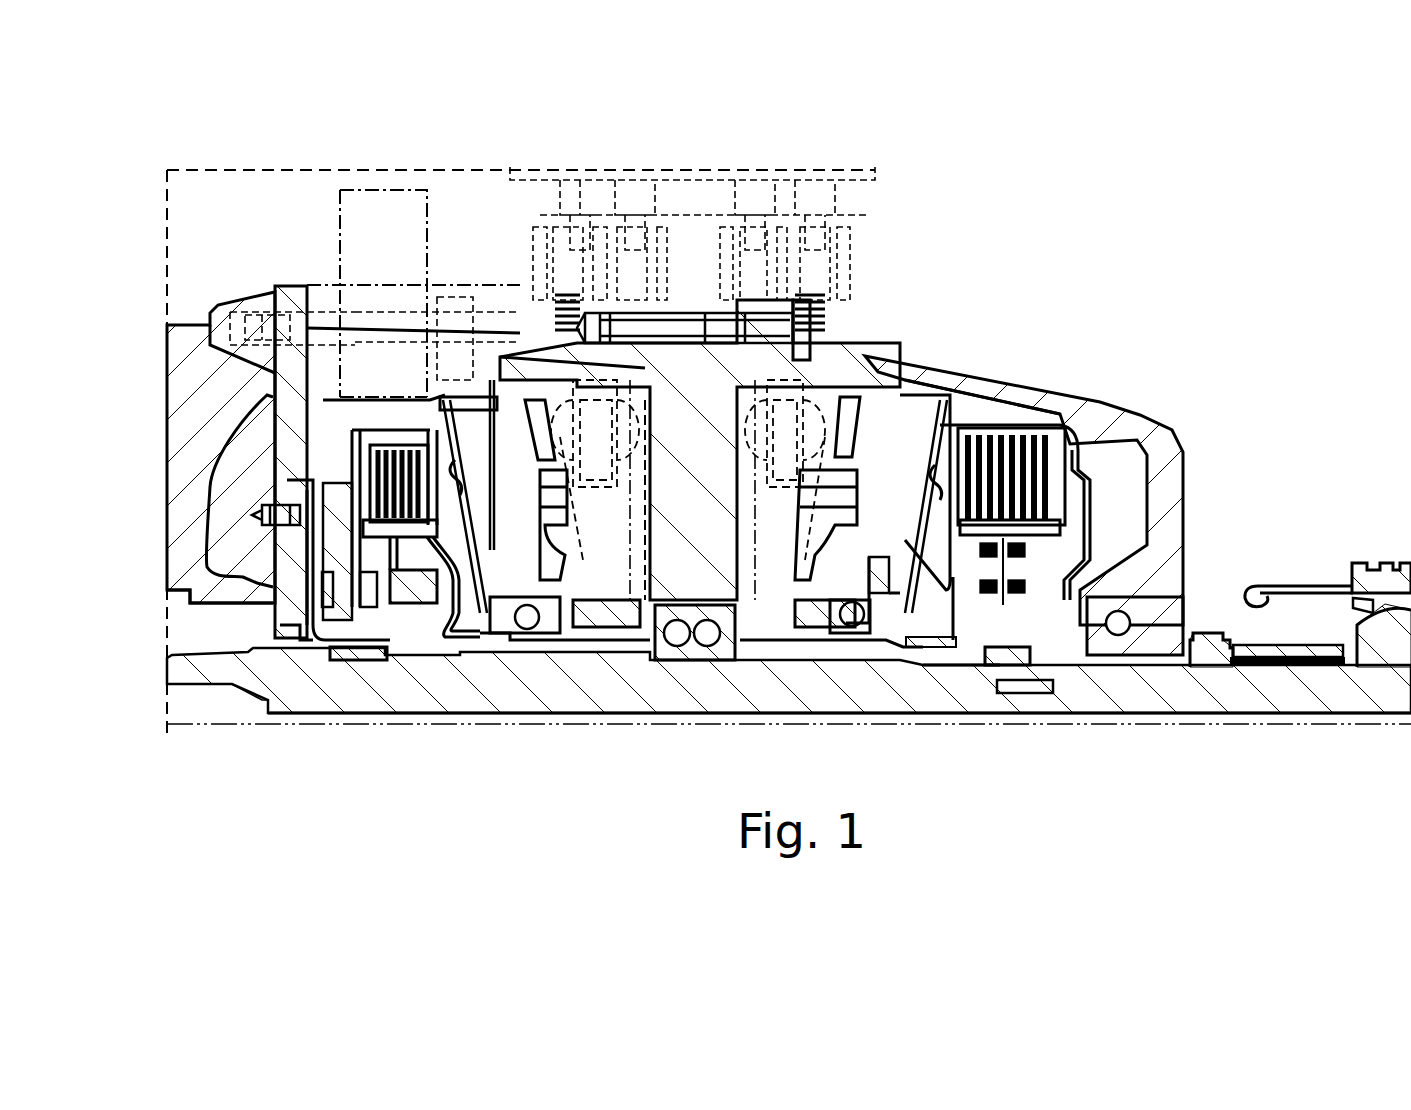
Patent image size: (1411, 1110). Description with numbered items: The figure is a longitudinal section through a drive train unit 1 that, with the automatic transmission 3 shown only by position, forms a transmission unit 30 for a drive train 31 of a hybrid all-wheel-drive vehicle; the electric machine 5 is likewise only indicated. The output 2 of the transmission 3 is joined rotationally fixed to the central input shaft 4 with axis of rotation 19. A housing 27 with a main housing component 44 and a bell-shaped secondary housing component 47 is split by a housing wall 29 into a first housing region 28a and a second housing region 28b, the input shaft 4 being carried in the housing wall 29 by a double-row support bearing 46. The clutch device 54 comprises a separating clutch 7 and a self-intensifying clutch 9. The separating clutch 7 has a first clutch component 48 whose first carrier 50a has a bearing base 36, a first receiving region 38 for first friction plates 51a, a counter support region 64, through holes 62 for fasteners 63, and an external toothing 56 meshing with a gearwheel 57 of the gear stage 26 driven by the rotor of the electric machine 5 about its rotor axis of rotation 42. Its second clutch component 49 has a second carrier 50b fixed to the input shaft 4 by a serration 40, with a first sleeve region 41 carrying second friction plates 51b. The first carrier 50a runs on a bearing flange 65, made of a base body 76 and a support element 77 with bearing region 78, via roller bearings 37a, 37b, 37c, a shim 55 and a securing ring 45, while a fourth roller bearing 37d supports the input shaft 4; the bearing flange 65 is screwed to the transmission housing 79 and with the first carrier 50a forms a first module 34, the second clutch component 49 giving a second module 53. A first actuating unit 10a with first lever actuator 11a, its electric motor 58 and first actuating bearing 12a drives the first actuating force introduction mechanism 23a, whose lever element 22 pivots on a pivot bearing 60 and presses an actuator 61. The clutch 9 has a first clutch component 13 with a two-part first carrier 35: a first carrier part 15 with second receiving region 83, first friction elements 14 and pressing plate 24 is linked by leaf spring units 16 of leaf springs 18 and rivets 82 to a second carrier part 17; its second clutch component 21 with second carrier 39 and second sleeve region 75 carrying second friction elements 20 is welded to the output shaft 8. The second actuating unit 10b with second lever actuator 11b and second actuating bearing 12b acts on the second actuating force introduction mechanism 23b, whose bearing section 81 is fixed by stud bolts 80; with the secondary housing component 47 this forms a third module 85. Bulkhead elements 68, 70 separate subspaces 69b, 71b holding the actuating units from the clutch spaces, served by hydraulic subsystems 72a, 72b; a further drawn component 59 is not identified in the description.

The drive train unit 1 is at (487, 195).
The output 2 is at (237, 262).
The transmission 3 is at (200, 288).
The input shaft 4 is at (300, 727).
The electric machine 5 is at (383, 153).
The separating clutch 7 is at (550, 655).
The output shaft 8 is at (1347, 718).
The second clutch 9 is at (1033, 432).
The first actuating unit 10a is at (580, 647).
The second actuating unit 10b is at (830, 640).
The first lever actuator 11a is at (692, 282).
The second lever actuator 11b is at (850, 400).
The first actuating bearing 12a is at (556, 572).
The second actuating bearing 12b is at (945, 640).
The first clutch component 13 is at (1047, 653).
The first friction elements 14 is at (1027, 405).
The first carrier part 15 is at (955, 660).
The leaf spring units 16 is at (1008, 600).
The second carrier part 17 is at (1022, 655).
The leaf springs 18 is at (1040, 548).
The axis of rotation 19 is at (210, 726).
The second friction elements 20 is at (1047, 432).
The second clutch component 21 is at (1078, 447).
The lever element 22 is at (470, 505).
The first actuating force introduction mechanism 23a is at (513, 295).
The second actuating force introduction mechanism 23b is at (945, 403).
The pressing plate 24 is at (550, 415).
The gear stage 26 is at (305, 390).
The housing 27 is at (697, 360).
The first housing region 28a is at (575, 310).
The second housing region 28b is at (937, 385).
The housing wall 29 is at (700, 450).
The transmission unit 30 is at (832, 125).
The drive train 31 is at (1147, 148).
The first module 34 is at (305, 410).
The first carrier 35 is at (987, 668).
The bearing base 36 is at (295, 608).
The first roller bearing 37a is at (400, 660).
The second roller bearing 37b is at (290, 600).
The third roller bearing 37c is at (415, 655).
The fourth roller bearing 37d is at (375, 650).
The first receiving region 38 is at (380, 440).
The second carrier 39 is at (1138, 578).
The serration 40 is at (470, 640).
The first sleeve region 41 is at (425, 525).
The rotor axis of rotation 42 is at (437, 400).
The main housing component 44 is at (545, 350).
The securing ring 45 is at (425, 640).
The support bearing 46 is at (680, 648).
The secondary housing component 47 is at (1165, 440).
The first clutch component 48 is at (260, 512).
The second clutch component 49 is at (482, 390).
The first carrier 50a is at (300, 457).
The second carrier 50b is at (455, 650).
The first friction plates 51a is at (410, 445).
The second friction plates 51b is at (425, 508).
The second module 53 is at (748, 340).
The clutch device 54 is at (700, 157).
The shim 55 is at (440, 640).
The toothing 56 is at (355, 405).
The gearwheel 57 is at (413, 243).
The electric motor 58 is at (530, 172).
The rotor hub 59 is at (647, 655).
The pivot bearing 60 is at (527, 405).
The actuator 61 is at (470, 468).
The through holes 62 is at (258, 563).
The fasteners 63 is at (290, 488).
The counter support region 64 is at (367, 507).
The bearing flange 65 is at (300, 535).
The first bulkhead element 68 is at (494, 535).
The second subspace 69b is at (652, 515).
The second bulkhead element 70 is at (925, 395).
The second subspace 71b is at (736, 490).
The hydraulic subsystem 72a is at (565, 318).
The hydraulic subsystem 72b is at (855, 358).
The second sleeve region 75 is at (980, 432).
The base body 76 is at (270, 396).
The support element 77 is at (300, 658).
The bearing region 78 is at (425, 652).
The transmission housing 79 is at (190, 333).
The stud bolts 80 is at (961, 612).
The bearing section 81 is at (940, 400).
The rivet 82 is at (1004, 568).
The second receiving region 83 is at (1050, 495).
The third module 85 is at (1143, 375).